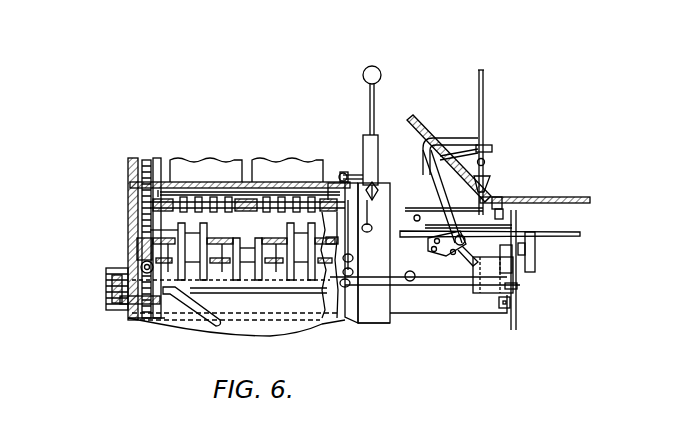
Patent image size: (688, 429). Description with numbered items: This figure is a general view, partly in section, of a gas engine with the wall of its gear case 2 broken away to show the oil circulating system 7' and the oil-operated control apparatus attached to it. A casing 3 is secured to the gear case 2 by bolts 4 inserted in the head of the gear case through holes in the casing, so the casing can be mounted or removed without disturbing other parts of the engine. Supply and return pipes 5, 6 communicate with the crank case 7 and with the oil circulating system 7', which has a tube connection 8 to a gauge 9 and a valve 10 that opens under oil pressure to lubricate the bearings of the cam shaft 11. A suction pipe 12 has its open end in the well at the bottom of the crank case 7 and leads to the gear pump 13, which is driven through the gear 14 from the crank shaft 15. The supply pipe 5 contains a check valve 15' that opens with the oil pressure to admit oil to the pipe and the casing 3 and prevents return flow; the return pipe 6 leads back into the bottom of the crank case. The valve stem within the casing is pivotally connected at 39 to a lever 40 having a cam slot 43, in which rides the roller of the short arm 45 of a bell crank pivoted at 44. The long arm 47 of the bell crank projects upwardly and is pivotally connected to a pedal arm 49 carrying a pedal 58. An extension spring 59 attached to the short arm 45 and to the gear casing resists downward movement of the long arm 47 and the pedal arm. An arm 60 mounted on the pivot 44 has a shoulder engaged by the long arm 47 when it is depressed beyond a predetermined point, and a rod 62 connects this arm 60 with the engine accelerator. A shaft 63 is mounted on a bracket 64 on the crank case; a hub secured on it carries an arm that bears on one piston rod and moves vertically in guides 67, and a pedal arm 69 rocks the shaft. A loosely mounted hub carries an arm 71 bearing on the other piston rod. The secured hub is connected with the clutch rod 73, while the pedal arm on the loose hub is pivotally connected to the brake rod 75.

The gear case 2 is at (472, 307).
The casing 3 is at (500, 263).
The bolts 4 is at (518, 307).
The supply pipe 5 is at (462, 290).
The return pipe 6 is at (468, 285).
The crank case 7 is at (102, 353).
The oil circulating system 7' is at (314, 198).
The tube connection 8 is at (370, 105).
The gauge 9 is at (363, 72).
The valve 10 is at (366, 145).
The cam shaft 11 is at (133, 202).
The suction pipe 12 is at (157, 322).
The gear pump 13 is at (110, 305).
The gear 14 is at (143, 282).
The crank shaft 15 is at (109, 225).
The check valve 15' is at (323, 295).
The pivotal connection 39 is at (493, 221).
The lever 40 is at (517, 217).
The cam slot 43 is at (510, 218).
The pivot 44 is at (497, 202).
The short arm 45 is at (501, 213).
The long arm 47 is at (490, 178).
The pedal arm 49 is at (487, 148).
The pedal 58 is at (489, 163).
The extension spring 59 is at (406, 280).
The arm 60 is at (487, 190).
The rod 62 is at (428, 227).
The shaft 63 is at (515, 221).
The bracket 64 is at (456, 246).
The guides 67 is at (530, 240).
The pedal arm 69 is at (481, 135).
The arm 71 is at (527, 250).
The clutch rod 73 is at (453, 290).
The brake rod 75 is at (580, 233).